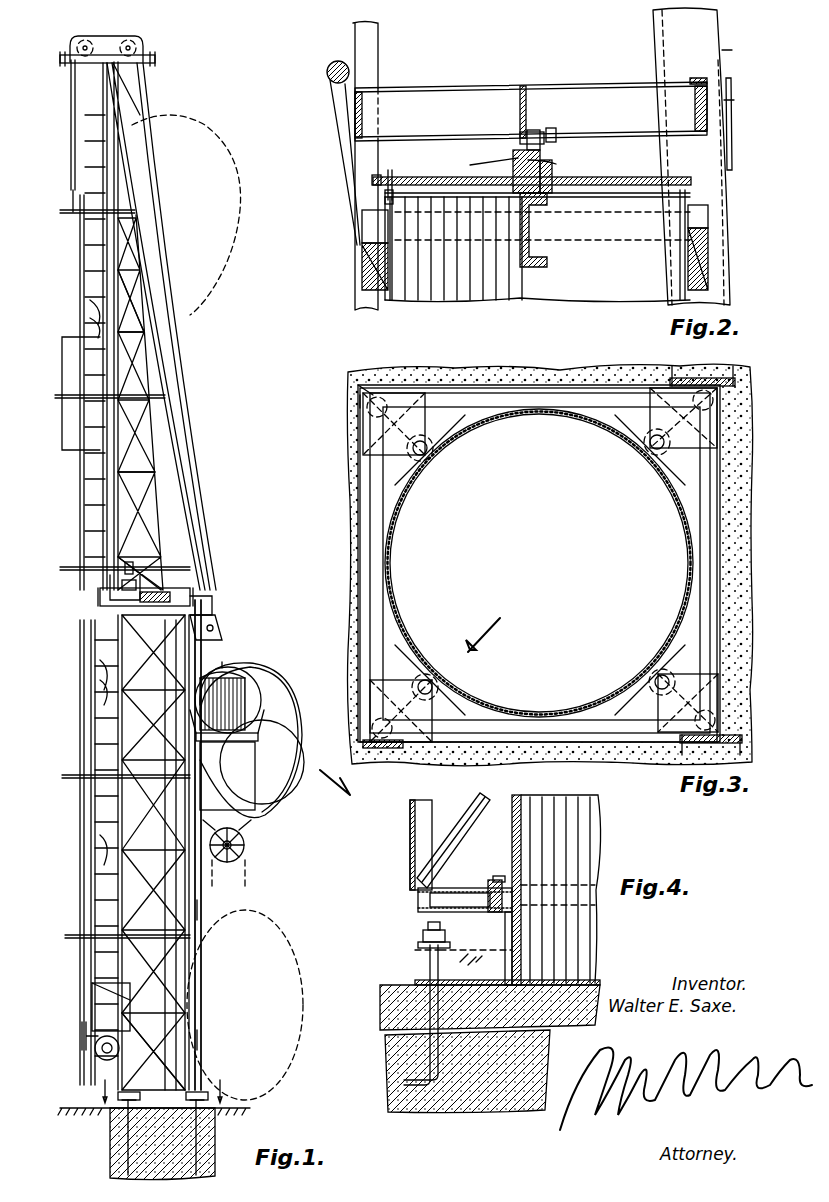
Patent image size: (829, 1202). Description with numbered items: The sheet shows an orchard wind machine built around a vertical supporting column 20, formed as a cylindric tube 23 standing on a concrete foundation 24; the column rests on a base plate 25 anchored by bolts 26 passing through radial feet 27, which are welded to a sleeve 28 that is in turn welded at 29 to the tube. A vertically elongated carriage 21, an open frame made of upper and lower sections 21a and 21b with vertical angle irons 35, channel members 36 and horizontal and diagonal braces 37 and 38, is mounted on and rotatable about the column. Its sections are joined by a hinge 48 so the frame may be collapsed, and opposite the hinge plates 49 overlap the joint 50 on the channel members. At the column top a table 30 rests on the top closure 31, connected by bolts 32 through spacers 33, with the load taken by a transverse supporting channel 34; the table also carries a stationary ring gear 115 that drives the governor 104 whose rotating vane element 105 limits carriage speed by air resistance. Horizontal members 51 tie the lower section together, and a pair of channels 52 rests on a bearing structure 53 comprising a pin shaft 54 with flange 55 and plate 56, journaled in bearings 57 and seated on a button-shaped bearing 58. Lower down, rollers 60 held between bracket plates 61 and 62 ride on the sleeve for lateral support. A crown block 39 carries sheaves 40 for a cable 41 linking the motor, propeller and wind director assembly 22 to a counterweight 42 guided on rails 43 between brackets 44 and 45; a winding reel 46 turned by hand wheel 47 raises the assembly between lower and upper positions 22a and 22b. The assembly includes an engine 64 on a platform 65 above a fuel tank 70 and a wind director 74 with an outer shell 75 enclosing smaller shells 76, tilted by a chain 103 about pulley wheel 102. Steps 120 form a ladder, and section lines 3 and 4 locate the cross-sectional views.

In FIG. 1, the section line 3— 3 is at (160, 1084).
In FIG. 3, the section line 4— 4 is at (410, 708).
In FIG. 1, the vertical supporting column 20 is at (138, 886).
In FIG. 1, the carriage 21 is at (115, 640).
In FIG. 1, the upper carriage section 21a is at (180, 428).
In FIG. 1, the lower carriage section 21b is at (205, 912).
In FIG. 1, the motor, propeller and wind director assembly 22 is at (278, 680).
In FIG. 1, the lower position of assembly 22a is at (296, 952).
In FIG. 1, the upper position of assembly 22b is at (235, 148).
In FIG. 1, the cylindric tube 23 is at (190, 972).
In FIG. 2, the cylindric tube 23 is at (688, 284).
In FIG. 3, the cylindric tube 23 is at (688, 590).
In FIG. 4, the cylindric tube 23 is at (512, 833).
In FIG. 1, the concrete foundation 24 is at (108, 1113).
In FIG. 3, the concrete foundation 24 is at (748, 508).
In FIG. 4, the concrete foundation 24 is at (380, 1008).
In FIG. 4, the base plate 25 is at (428, 965).
In FIG. 1, the bolts 26 is at (112, 1142).
In FIG. 4, the bolts 26 is at (420, 950).
In FIG. 1, the radial feet 27 is at (210, 1105).
In FIG. 3, the radial feet 27 is at (440, 440).
In FIG. 4, the radial feet 27 is at (450, 952).
In FIG. 3, the sleeve 28 is at (700, 612).
In FIG. 4, the sleeve 28 is at (505, 955).
In FIG. 4, the weld 29 is at (508, 880).
In FIG. 1, the table 30 is at (216, 612).
In FIG. 2, the table 30 is at (556, 166).
In FIG. 2, the top closure 31 is at (688, 198).
In FIG. 2, the bolts 32 is at (373, 180).
In FIG. 2, the spacers 33 is at (385, 195).
In FIG. 2, the supporting channel 34 is at (548, 250).
In FIG. 1, the angle irons 35 is at (98, 735).
In FIG. 2, the angle irons 35 is at (355, 40).
In FIG. 3, the angle irons 35 is at (378, 395).
In FIG. 4, the angle irons 35 is at (415, 828).
In FIG. 1, the channel members 36 is at (190, 510).
In FIG. 2, the channel members 36 is at (700, 26).
In FIG. 3, the channel members 36 is at (735, 380).
In FIG. 1, the horizontal braces 37 is at (140, 332).
In FIG. 1, the diagonal braces 38 is at (135, 305).
In FIG. 2, the diagonal braces 38 is at (390, 295).
In FIG. 4, the diagonal braces 38 is at (478, 796).
In FIG. 1, the crown block 39 is at (130, 58).
In FIG. 1, the sheaves 40 is at (128, 42).
In FIG. 1, the cable 41 is at (130, 125).
In FIG. 1, the counterweight 42 is at (62, 365).
In FIG. 1, the guide rails 43 is at (84, 292).
In FIG. 1, the brackets 44 is at (94, 1005).
In FIG. 1, the brackets 45 is at (62, 214).
In FIG. 1, the winding reel 46 is at (98, 1058).
In FIG. 1, the hand wheel 47 is at (82, 1046).
In FIG. 1, the hinge 48 is at (98, 600).
In FIG. 2, the hinge 48 is at (330, 82).
In FIG. 1, the plates 49 is at (210, 596).
In FIG. 2, the plates 49 is at (732, 88).
In FIG. 2, the joint 50 is at (708, 80).
In FIG. 2, the horizontally extending members 51 is at (355, 125).
In FIG. 2, the channels 52 is at (518, 87).
In FIG. 2, the bearing structure 53 is at (560, 150).
In FIG. 2, the pin shaft 54 is at (553, 132).
In FIG. 2, the flange 55 is at (530, 136).
In FIG. 2, the plate 56 is at (522, 134).
In FIG. 2, the bearings 57 is at (518, 158).
In FIG. 2, the button-shaped bearing 58 is at (556, 165).
In FIG. 3, the rollers 60 is at (428, 440).
In FIG. 4, the rollers 60 is at (485, 890).
In FIG. 3, the bracket plates 61 is at (418, 395).
In FIG. 4, the bracket plates 61 is at (448, 890).
In FIG. 4, the bracket plates 62 is at (440, 910).
In FIG. 1, the engine 64 is at (230, 680).
In FIG. 1, the platform 65 is at (270, 740).
In FIG. 1, the tank 70 is at (240, 772).
In FIG. 1, the wind director 74 is at (270, 668).
In FIG. 1, the outer cylindric shell 75 is at (280, 690).
In FIG. 1, the shells 76 is at (258, 706).
In FIG. 1, the chain pulley wheel 102 is at (246, 840).
In FIG. 1, the chain 103 is at (247, 860).
In FIG. 1, the governor device 104 is at (140, 585).
In FIG. 1, the rotating vane element 105 is at (140, 568).
In FIG. 2, the stationary ring gear 115 is at (372, 180).
In FIG. 1, the steps 120 is at (90, 305).